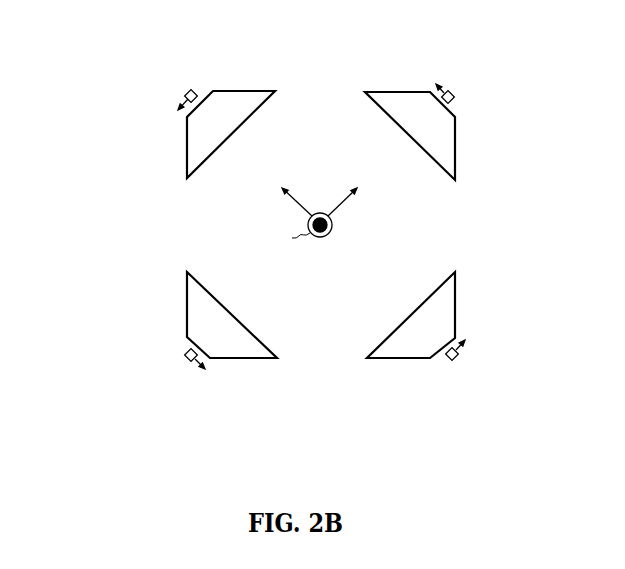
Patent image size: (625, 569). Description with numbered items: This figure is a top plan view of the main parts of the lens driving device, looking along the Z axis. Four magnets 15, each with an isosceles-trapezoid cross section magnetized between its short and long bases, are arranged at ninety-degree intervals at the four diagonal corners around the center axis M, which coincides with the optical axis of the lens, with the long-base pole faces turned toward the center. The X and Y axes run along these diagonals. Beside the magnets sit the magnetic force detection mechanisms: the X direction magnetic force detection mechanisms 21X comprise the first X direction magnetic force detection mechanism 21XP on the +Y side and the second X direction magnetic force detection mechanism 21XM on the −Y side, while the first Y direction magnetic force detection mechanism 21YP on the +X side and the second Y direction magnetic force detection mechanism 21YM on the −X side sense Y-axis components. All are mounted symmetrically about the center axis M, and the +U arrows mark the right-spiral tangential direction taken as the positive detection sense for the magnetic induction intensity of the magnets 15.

The magnet 15 is at (248, 98).
The X direction magnetic force detection mechanisms 21X is at (112, 96).
The first X direction magnetic force detection mechanism 21XP is at (186, 92).
The first Y direction magnetic force detection mechanism 21YP is at (455, 96).
The second Y direction magnetic force detection mechanism 21YM is at (188, 350).
The second X direction magnetic force detection mechanism 21XM is at (456, 362).
The center axis M is at (332, 233).